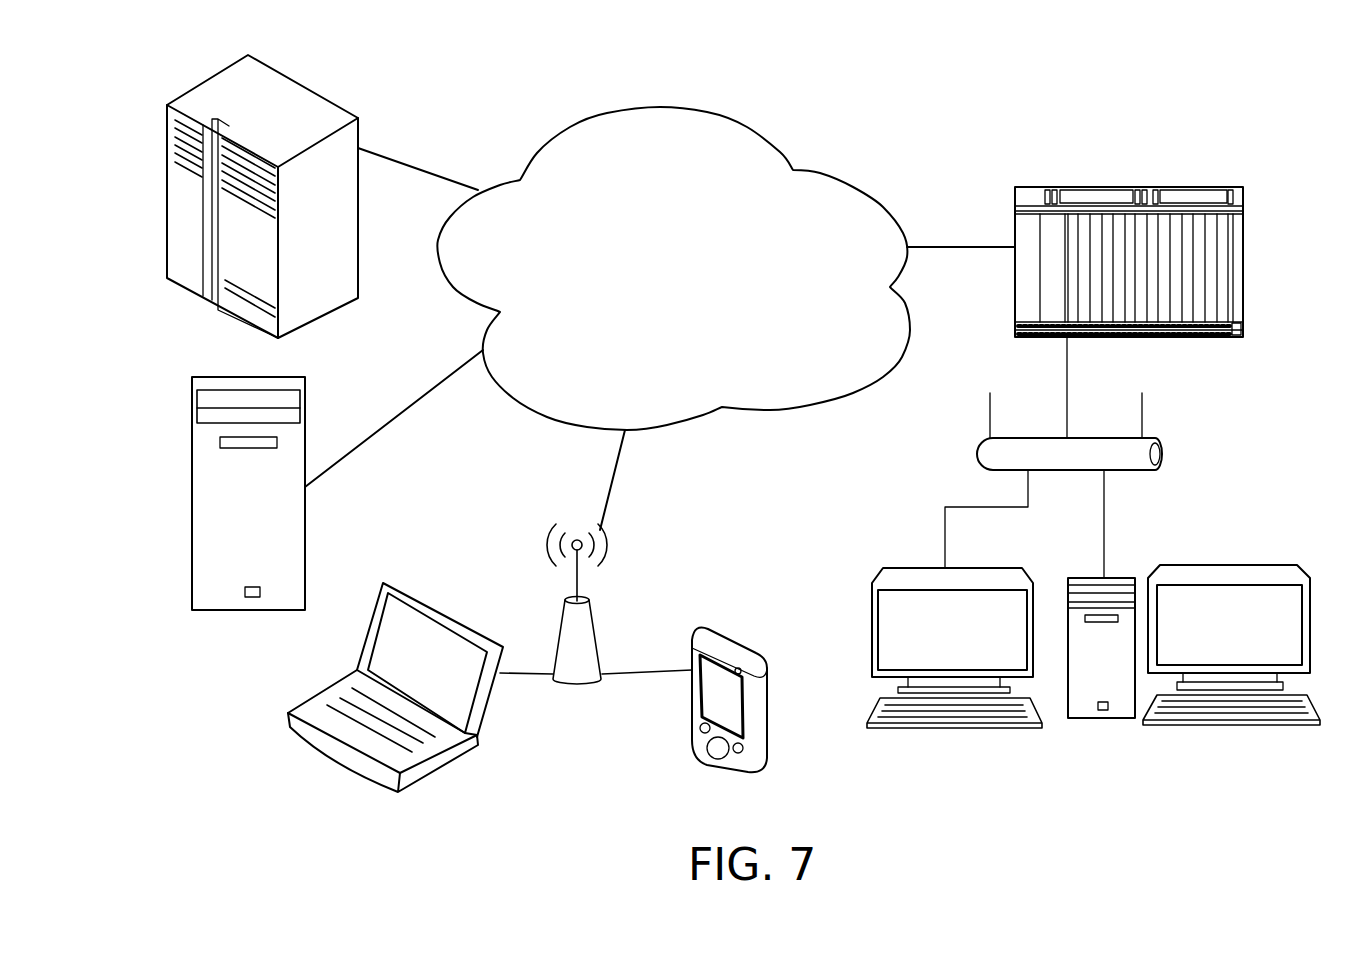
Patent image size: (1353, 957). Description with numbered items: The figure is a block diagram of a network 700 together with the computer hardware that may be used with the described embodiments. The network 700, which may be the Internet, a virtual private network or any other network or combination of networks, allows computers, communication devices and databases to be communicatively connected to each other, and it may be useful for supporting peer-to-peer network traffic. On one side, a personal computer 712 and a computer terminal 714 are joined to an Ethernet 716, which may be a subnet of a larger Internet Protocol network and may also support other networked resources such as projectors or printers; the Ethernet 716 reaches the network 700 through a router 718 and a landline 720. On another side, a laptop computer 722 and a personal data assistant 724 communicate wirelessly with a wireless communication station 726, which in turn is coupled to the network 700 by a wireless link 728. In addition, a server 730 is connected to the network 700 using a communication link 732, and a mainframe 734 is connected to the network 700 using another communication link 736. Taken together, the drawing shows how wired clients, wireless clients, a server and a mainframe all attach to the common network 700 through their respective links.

The network 700 is at (930, 90).
The personal computer 712 is at (1090, 722).
The computer terminal 714 is at (932, 732).
The Ethernet 716 is at (1143, 470).
The router 718 is at (1163, 338).
The landline 720 is at (925, 248).
The laptop computer 722 is at (430, 777).
The personal data assistant 724 is at (760, 767).
The wireless communication station 726 is at (580, 688).
The wireless link 728 is at (613, 475).
The server 730 is at (205, 612).
The communication link 732 is at (340, 465).
The mainframe 734 is at (325, 312).
The communication link 736 is at (397, 163).